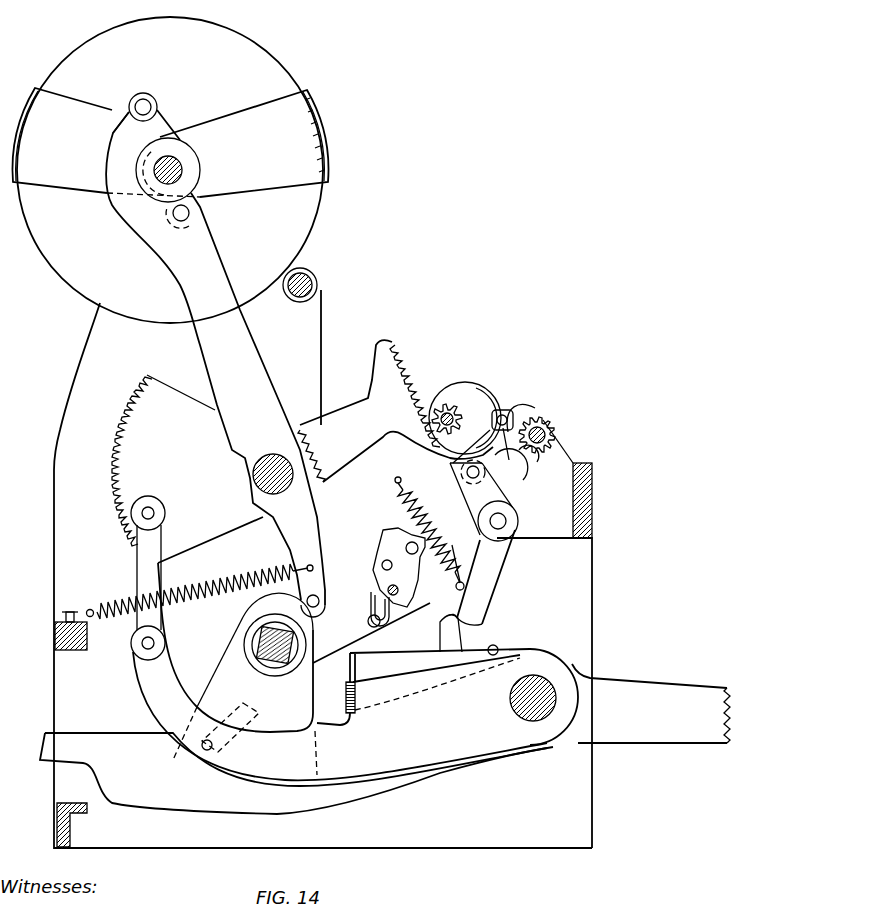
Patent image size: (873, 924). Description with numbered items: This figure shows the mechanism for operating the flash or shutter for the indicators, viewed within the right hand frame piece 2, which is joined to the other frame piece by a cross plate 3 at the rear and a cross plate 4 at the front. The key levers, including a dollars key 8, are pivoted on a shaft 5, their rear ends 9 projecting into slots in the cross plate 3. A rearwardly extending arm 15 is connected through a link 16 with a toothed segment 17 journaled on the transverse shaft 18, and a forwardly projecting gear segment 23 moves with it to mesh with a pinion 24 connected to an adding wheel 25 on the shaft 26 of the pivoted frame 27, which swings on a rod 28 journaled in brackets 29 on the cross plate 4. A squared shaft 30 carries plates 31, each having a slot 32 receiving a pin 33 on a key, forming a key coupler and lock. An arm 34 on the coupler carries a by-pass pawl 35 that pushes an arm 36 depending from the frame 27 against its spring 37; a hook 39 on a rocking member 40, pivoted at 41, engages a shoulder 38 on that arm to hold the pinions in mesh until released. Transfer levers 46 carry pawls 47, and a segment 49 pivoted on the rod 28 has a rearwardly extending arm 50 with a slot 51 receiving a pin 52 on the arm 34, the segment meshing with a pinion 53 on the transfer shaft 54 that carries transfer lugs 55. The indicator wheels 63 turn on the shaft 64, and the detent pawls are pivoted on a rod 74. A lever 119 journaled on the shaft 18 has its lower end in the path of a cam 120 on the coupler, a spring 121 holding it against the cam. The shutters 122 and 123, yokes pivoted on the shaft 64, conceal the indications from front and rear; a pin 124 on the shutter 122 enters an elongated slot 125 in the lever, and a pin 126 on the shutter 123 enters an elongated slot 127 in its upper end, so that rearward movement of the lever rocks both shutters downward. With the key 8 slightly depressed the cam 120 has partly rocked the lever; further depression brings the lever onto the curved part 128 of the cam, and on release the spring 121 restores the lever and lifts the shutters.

The right hand frame piece 2 is at (83, 397).
The cross plate 3 is at (55, 630).
The cross plate 4 is at (590, 507).
The shaft or rod 5 is at (550, 694).
The dollars key 8 is at (655, 697).
The rear end of key lever 9 is at (70, 747).
The rearwardly extending arm 15 is at (153, 690).
The link 16 is at (152, 568).
The toothed segment 17 is at (133, 447).
The transverse shaft 18 is at (268, 457).
The gear segment 23 is at (392, 363).
The pinion 24 is at (467, 400).
The adding wheel 25 is at (460, 380).
The shaft 26 is at (455, 400).
The pivoted frame 27 is at (473, 483).
The rod 28 is at (503, 520).
The bracket 29 is at (577, 458).
The squared shaft 30 is at (253, 635).
The plate 31 is at (225, 668).
The slot 32 is at (253, 713).
The pin 33 is at (217, 747).
The forwardly extending arm 34 is at (359, 615).
The by-pass pawl 35 is at (371, 633).
The arm 36 is at (470, 596).
The spring 37 is at (407, 493).
The notch or shoulder 38 is at (470, 621).
The hook 39 is at (448, 620).
The rocking member 40 is at (487, 638).
The pivot 41 is at (505, 650).
The transfer lever 46 is at (515, 410).
The pawl 47 is at (498, 408).
The segment 49 is at (512, 477).
The rearwardly extending arm 50 is at (462, 558).
The slot 51 is at (400, 542).
The pin 52 is at (470, 567).
The pinion 53 is at (540, 420).
The transfer shaft 54 is at (545, 436).
The transfer lug 55 is at (516, 466).
The indicator wheel 63 is at (283, 87).
The shaft of the indicator wheels 64 is at (185, 170).
The rod 74 is at (318, 284).
The lever 119 is at (243, 362).
The cam or nose 120 is at (270, 603).
The spring 121 is at (233, 577).
The shutter or flash 122 is at (257, 117).
The shutter or flash 123 is at (78, 118).
The pin 124 is at (190, 213).
The elongated slot 125 is at (187, 228).
The pin 126 is at (146, 107).
The elongated slot 127 is at (150, 118).
The curved part 128 is at (309, 587).